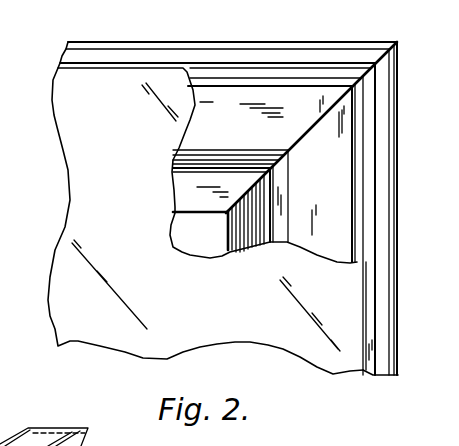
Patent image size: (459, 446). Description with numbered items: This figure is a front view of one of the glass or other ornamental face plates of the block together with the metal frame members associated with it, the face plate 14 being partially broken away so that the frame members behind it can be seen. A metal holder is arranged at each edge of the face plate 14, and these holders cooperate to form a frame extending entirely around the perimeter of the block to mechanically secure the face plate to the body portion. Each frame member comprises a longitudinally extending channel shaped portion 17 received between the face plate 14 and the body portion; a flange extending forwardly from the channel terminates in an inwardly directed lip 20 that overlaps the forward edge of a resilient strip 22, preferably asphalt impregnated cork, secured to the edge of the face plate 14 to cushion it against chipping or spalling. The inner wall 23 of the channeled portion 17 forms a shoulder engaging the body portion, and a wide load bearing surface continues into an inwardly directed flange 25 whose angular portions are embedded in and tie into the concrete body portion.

The face plate 14 is at (70, 136).
The inner wall 23 is at (198, 50).
The lip 20 is at (384, 72).
The channel shaped portion 17 is at (348, 144).
The strip 22 is at (371, 283).
The inwardly directed flange 25 is at (238, 241).